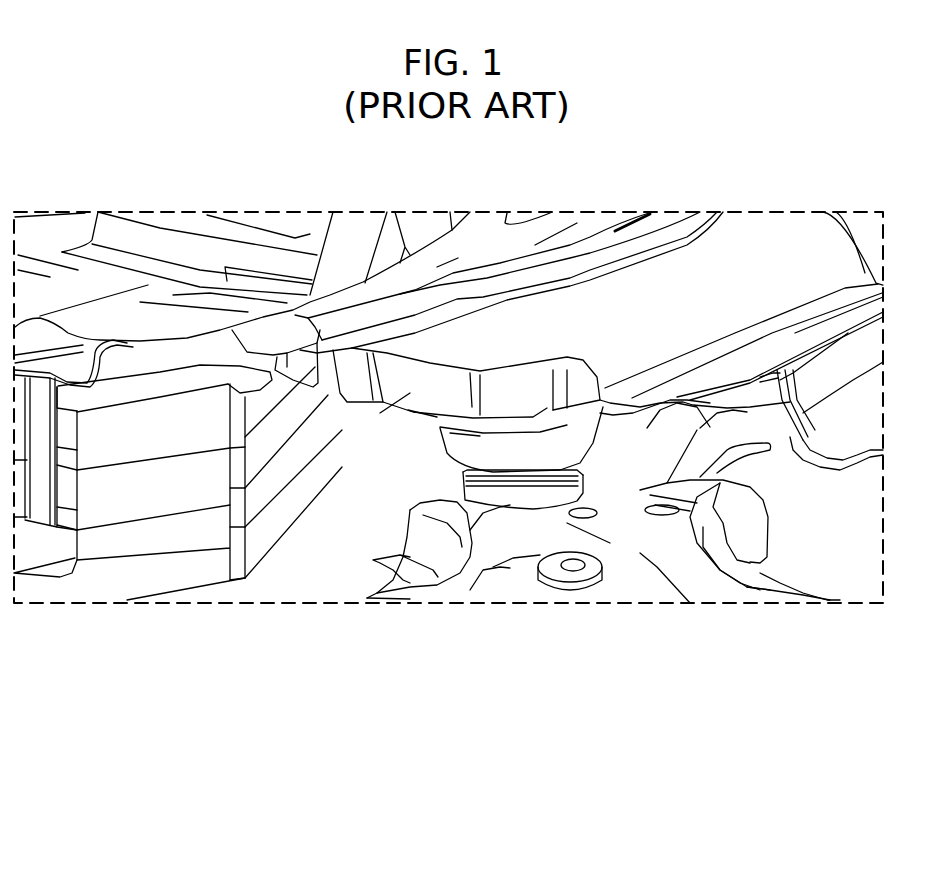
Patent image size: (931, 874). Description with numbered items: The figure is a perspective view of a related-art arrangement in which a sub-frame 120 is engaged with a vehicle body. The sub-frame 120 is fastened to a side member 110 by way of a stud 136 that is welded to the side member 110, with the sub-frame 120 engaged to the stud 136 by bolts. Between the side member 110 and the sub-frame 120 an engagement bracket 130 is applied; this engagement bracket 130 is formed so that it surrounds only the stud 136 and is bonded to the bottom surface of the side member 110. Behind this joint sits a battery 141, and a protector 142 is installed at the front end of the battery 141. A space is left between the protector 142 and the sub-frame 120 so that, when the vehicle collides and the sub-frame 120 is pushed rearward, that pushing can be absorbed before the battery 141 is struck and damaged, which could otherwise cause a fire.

The side member 110 is at (617, 305).
The sub-frame 120 is at (507, 557).
The engagement bracket 130 is at (412, 393).
The stud 136 is at (494, 497).
The battery 141 is at (205, 567).
The protector 142 is at (110, 510).